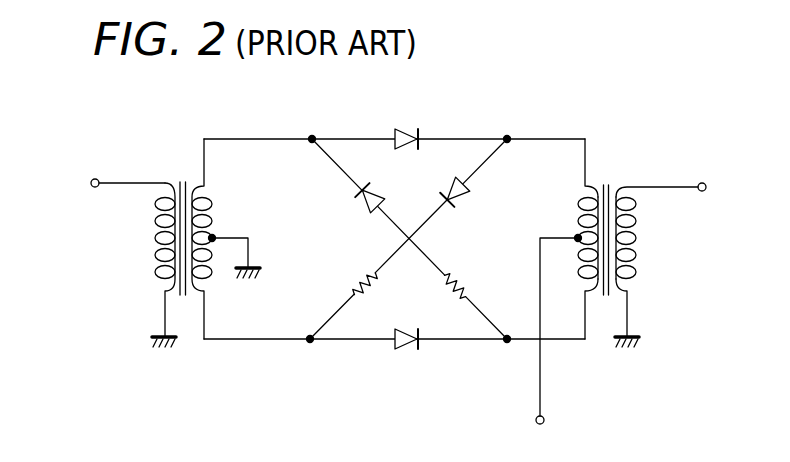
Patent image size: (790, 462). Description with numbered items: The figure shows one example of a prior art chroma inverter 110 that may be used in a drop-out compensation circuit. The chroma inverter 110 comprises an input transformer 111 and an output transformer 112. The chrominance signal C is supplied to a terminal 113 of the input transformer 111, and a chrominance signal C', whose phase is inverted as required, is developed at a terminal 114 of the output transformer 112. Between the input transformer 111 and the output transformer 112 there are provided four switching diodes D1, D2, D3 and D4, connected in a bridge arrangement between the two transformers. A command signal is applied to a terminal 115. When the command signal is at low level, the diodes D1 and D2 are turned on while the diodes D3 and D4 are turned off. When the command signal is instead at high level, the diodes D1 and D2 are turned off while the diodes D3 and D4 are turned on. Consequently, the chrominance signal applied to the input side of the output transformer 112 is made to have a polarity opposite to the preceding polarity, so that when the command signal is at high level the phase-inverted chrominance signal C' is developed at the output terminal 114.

The chroma inverter 110 is at (413, 213).
The input transformer 111 is at (183, 181).
The output transformer 112 is at (607, 181).
The terminal 113 is at (91, 180).
The terminal 114 is at (702, 182).
The terminal 115 is at (545, 418).
The switching diode D1 is at (405, 150).
The switching diode D2 is at (407, 328).
The switching diode D3 is at (467, 195).
The switching diode D4 is at (355, 208).